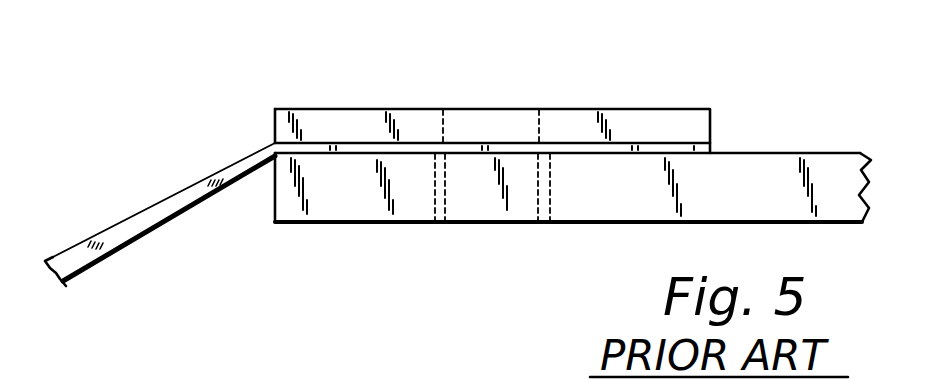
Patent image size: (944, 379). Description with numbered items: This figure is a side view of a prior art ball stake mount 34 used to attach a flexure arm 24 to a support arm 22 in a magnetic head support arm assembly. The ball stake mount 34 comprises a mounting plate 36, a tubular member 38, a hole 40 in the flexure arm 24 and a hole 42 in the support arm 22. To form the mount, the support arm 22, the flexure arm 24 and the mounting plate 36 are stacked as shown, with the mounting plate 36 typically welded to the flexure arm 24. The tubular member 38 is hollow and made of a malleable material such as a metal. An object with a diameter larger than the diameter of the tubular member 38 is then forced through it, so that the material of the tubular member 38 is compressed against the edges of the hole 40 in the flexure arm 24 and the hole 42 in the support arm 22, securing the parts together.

The support arm 22 is at (740, 167).
The flexure arm 24 is at (173, 197).
The ball stake mount 34 is at (583, 97).
The mounting plate 36 is at (357, 123).
The tubular member 38 is at (475, 210).
The hole in flexure arm 40 is at (438, 140).
The hole in support arm 42 is at (550, 168).